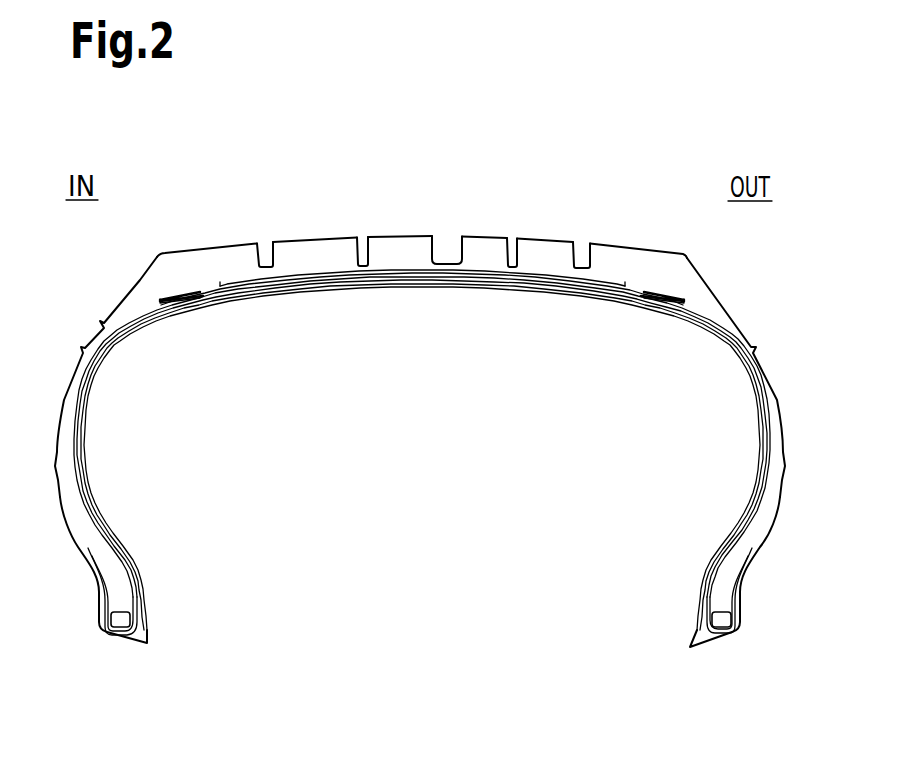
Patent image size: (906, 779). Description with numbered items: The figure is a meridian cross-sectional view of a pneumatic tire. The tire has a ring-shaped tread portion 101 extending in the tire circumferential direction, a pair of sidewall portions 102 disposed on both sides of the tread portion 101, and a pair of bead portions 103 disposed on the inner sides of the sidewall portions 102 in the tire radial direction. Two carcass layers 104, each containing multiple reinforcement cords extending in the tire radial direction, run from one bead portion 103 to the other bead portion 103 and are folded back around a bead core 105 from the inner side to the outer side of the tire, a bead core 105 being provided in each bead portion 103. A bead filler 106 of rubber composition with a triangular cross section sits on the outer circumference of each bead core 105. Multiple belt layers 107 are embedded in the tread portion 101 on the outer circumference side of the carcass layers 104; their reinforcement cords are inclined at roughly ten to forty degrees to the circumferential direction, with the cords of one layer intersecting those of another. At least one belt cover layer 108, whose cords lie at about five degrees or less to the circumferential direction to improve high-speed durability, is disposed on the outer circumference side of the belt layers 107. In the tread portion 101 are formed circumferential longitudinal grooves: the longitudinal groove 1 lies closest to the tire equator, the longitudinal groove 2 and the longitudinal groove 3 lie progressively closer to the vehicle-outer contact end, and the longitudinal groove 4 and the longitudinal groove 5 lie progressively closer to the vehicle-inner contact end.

The longitudinal groove 1 is at (437, 248).
The longitudinal groove 2 is at (513, 248).
The longitudinal groove 3 is at (580, 250).
The longitudinal groove 4 is at (362, 250).
The longitudinal groove 5 is at (264, 252).
The tread portion 101 is at (618, 245).
The sidewall portion 102 is at (73, 373).
The bead portion 103 is at (98, 605).
The carcass layer 104 is at (708, 325).
The bead core 105 is at (123, 618).
The bead filler 106 is at (115, 578).
The belt layer 107 is at (323, 287).
The belt cover layer 108 is at (197, 286).